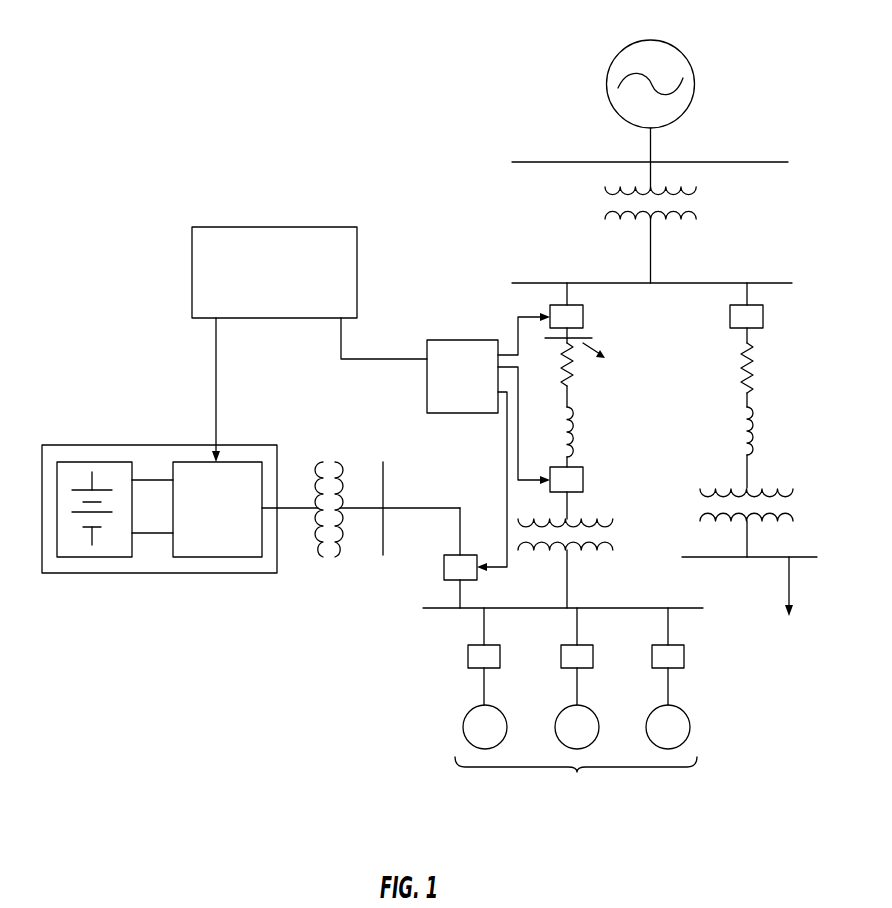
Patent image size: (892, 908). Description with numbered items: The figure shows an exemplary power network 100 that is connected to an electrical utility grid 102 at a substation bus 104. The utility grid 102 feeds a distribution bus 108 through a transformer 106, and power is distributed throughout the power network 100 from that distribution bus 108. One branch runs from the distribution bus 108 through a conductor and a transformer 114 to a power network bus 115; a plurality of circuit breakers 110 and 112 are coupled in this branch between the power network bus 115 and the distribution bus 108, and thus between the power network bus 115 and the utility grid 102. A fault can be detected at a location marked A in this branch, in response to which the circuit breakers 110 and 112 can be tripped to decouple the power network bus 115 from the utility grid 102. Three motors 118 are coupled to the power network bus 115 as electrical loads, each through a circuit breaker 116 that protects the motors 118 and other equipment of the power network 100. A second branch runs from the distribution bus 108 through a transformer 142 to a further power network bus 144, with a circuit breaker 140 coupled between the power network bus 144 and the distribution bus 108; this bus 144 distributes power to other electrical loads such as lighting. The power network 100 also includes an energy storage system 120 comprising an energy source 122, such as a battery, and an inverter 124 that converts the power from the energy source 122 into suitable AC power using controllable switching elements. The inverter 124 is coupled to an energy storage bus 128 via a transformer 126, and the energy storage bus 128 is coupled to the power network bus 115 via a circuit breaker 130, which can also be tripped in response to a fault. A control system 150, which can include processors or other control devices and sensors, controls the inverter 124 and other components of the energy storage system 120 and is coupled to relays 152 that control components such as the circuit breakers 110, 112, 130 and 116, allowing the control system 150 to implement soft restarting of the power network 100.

The power network 100 is at (106, 163).
The electrical utility grid 102 is at (694, 82).
The substation bus 104 is at (742, 157).
The transformer 106 is at (696, 217).
The distribution bus 108 is at (731, 283).
The circuit breaker 110 is at (583, 322).
The circuit breaker 112 is at (583, 481).
The transformer 114 is at (613, 548).
The power network bus 115 is at (438, 610).
The circuit breakers 116 is at (500, 656).
The motors 118 is at (576, 753).
The energy storage system 120 is at (150, 573).
The energy source 122 is at (90, 462).
The inverter 124 is at (248, 462).
The transformer 126 is at (335, 558).
The energy storage bus 128 is at (383, 480).
The circuit breaker 130 is at (444, 565).
The circuit breaker 140 is at (763, 322).
The transformer 142 is at (793, 494).
The power network bus 144 is at (805, 556).
The control system 150 is at (322, 227).
The relays 152 is at (474, 340).